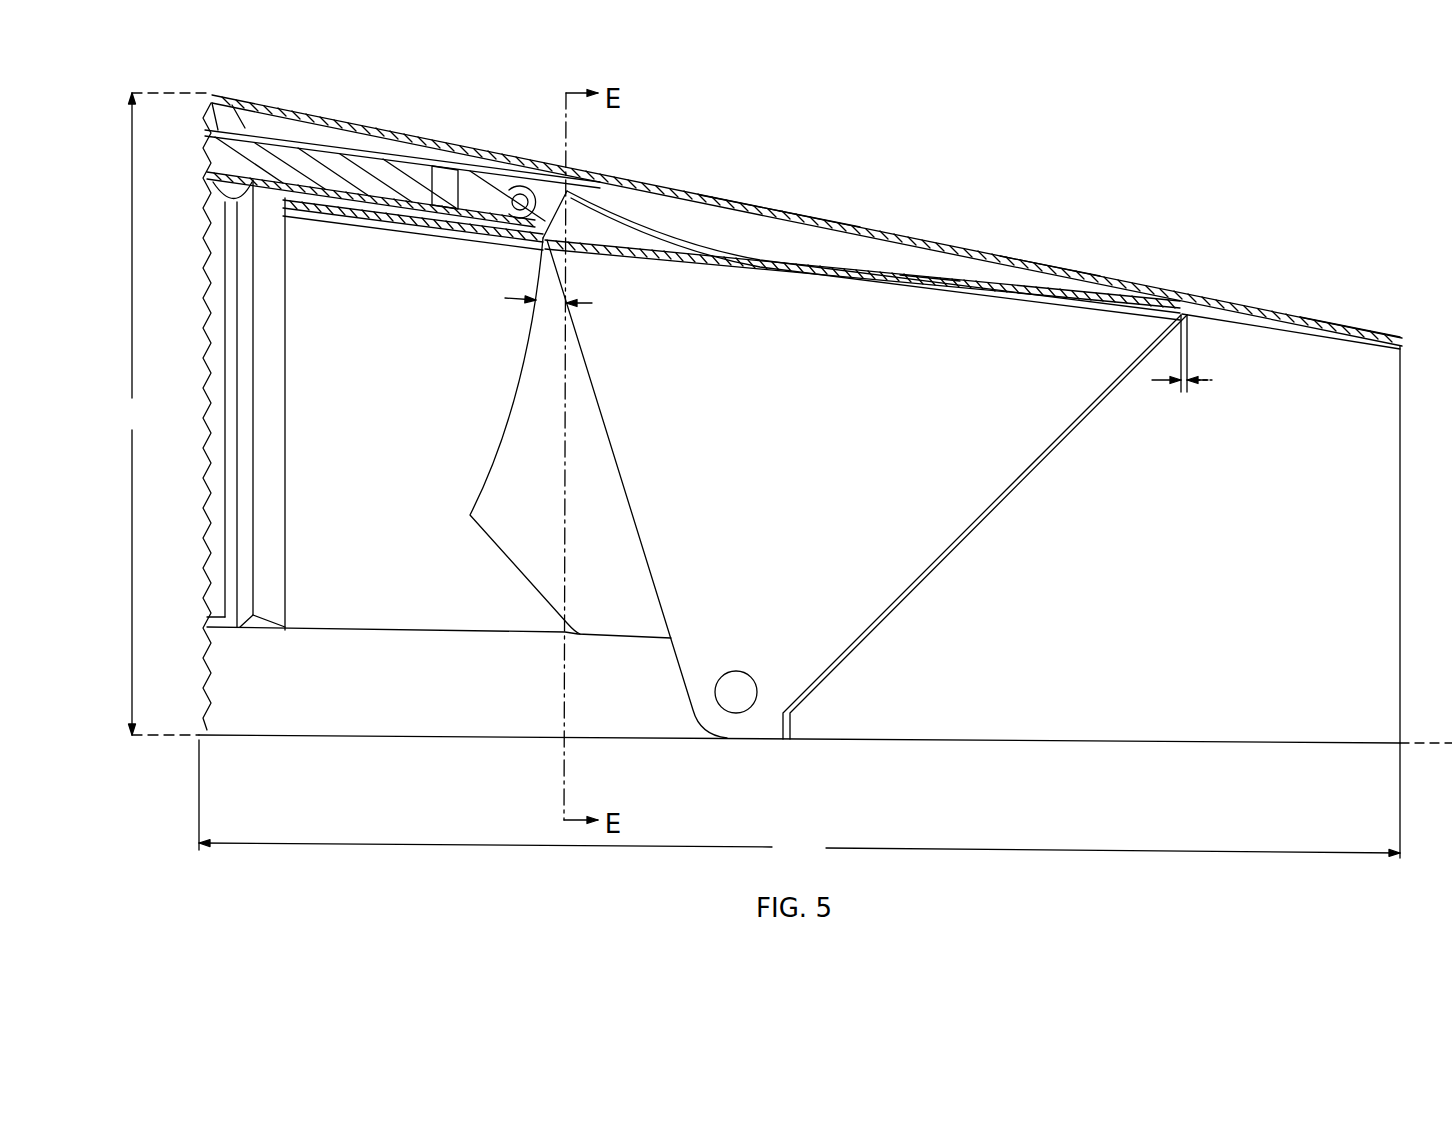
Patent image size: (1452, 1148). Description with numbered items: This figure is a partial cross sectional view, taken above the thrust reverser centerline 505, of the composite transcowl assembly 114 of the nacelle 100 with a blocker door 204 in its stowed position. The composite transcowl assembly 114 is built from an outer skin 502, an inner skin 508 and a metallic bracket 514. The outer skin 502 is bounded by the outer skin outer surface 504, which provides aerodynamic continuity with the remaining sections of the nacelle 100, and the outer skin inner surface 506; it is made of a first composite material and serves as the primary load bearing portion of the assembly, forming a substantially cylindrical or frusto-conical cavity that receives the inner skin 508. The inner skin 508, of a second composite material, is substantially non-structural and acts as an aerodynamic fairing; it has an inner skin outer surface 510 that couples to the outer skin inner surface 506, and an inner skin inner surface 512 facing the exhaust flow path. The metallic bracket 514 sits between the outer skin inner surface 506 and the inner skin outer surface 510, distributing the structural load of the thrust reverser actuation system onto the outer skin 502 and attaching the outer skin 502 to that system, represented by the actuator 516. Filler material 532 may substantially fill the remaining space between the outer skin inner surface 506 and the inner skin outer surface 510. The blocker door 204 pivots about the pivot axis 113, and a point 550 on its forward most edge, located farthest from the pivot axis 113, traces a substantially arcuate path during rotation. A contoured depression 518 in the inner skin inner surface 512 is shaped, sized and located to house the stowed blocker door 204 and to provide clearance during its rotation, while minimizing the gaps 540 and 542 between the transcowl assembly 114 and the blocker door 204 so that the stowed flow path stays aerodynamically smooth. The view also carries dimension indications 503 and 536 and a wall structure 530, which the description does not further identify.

The nacelle 100 is at (977, 141).
The pivot axis 113 is at (740, 702).
The composite transcowl assembly 114 is at (1027, 260).
The blocker door 204 is at (817, 495).
The outer skin 502 is at (797, 215).
The height dimension 503 is at (158, 414).
The outer skin outer surface 504 is at (636, 181).
The thrust reverser centerline 505 is at (1403, 742).
The outer skin inner surface 506 is at (738, 207).
The inner skin 508 is at (1343, 338).
The inner skin outer surface 510 is at (918, 268).
The inner skin inner surface 512 is at (378, 222).
The metallic bracket 514 is at (387, 141).
The actuator 516 is at (292, 160).
The contoured depression 518 is at (602, 228).
The wall 530 is at (288, 436).
The filler material 532 is at (807, 248).
The length dimension 536 is at (799, 848).
The gap 540 is at (523, 299).
The gap 542 is at (1022, 527).
The point 550 is at (518, 194).